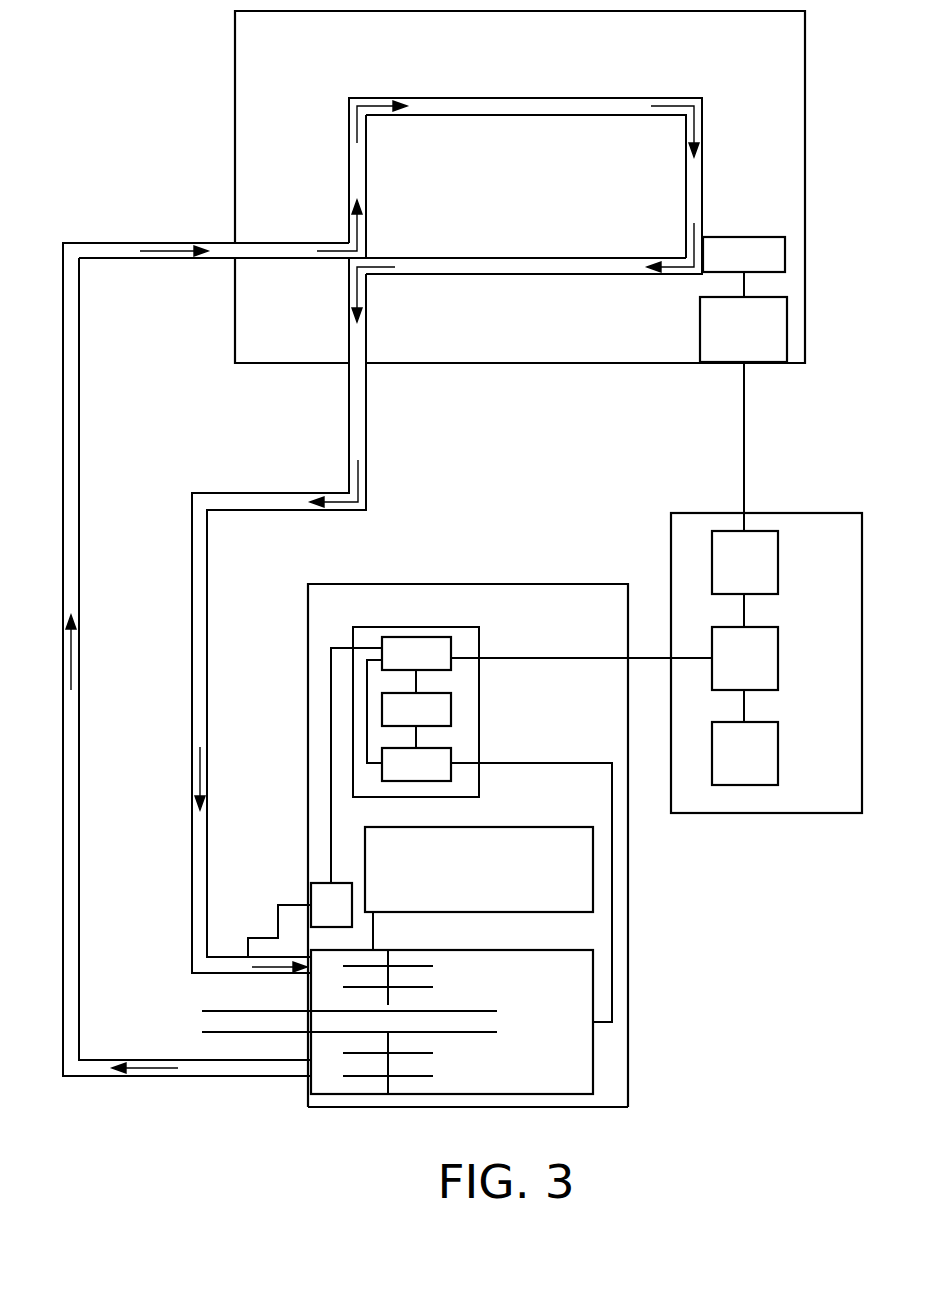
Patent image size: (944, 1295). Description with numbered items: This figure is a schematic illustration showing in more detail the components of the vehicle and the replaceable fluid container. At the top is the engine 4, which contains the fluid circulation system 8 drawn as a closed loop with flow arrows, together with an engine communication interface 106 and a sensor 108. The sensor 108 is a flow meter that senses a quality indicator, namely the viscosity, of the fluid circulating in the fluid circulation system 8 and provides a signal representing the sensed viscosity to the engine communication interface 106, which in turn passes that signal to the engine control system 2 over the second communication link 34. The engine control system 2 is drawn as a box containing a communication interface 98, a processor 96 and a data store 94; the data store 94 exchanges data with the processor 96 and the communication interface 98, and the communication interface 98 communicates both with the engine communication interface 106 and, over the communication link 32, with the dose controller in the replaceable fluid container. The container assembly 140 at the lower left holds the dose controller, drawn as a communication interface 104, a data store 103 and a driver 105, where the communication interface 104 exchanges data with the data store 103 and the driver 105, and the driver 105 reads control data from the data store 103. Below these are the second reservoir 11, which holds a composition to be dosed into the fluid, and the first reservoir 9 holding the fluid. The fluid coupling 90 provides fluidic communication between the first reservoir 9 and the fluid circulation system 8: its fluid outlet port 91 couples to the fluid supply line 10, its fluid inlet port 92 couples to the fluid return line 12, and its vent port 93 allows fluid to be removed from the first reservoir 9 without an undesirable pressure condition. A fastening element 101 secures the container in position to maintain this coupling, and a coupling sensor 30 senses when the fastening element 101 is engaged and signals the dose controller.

The engine control system 2 is at (810, 675).
The engine 4 is at (516, 74).
The fluid circulation system 8 is at (538, 116).
The first reservoir 9 is at (551, 992).
The fluid supply line 10 is at (79, 768).
The second reservoir 11 is at (464, 881).
The fluid return line 12 is at (192, 702).
The coupling sensor 30 is at (345, 916).
The communication link 32 is at (653, 657).
The second communication link 34 is at (744, 477).
The fluid coupling 90 is at (328, 1098).
The fluid outlet port 91 is at (440, 1067).
The fluid inlet port 92 is at (440, 977).
The vent port 93 is at (193, 1018).
The data store 94 is at (731, 764).
The processor 96 is at (731, 669).
The communication interface 98 is at (731, 574).
The fastening element 101 is at (263, 938).
The data store 103 is at (395, 721).
The communication interface 104 is at (395, 665).
The driver 105 is at (395, 776).
The engine communication interface 106 is at (723, 342).
The sensor 108 is at (723, 267).
The device 140 is at (452, 615).